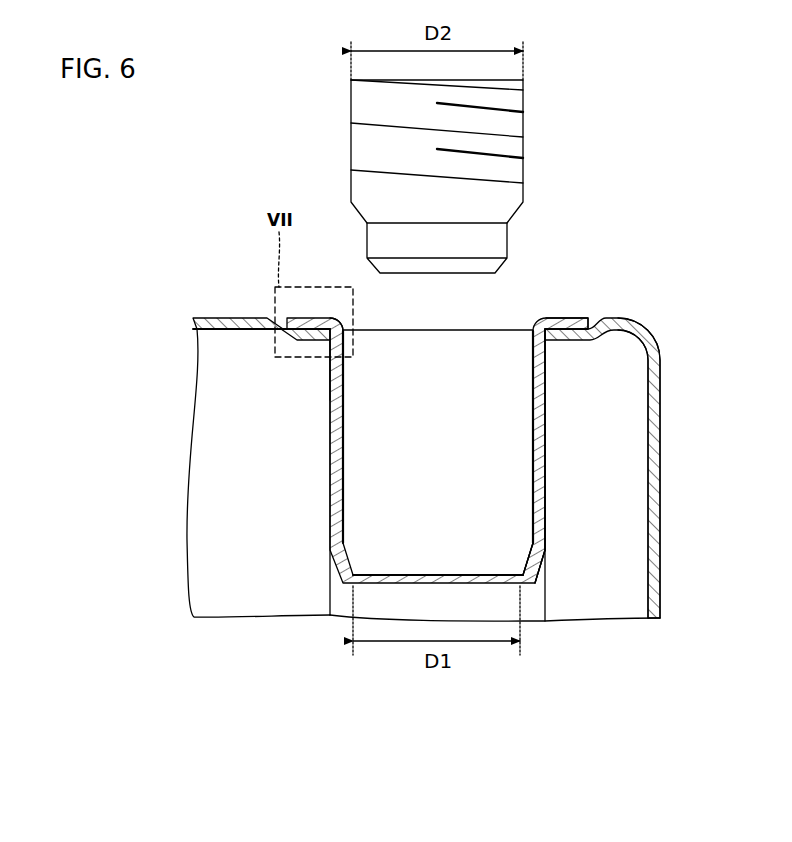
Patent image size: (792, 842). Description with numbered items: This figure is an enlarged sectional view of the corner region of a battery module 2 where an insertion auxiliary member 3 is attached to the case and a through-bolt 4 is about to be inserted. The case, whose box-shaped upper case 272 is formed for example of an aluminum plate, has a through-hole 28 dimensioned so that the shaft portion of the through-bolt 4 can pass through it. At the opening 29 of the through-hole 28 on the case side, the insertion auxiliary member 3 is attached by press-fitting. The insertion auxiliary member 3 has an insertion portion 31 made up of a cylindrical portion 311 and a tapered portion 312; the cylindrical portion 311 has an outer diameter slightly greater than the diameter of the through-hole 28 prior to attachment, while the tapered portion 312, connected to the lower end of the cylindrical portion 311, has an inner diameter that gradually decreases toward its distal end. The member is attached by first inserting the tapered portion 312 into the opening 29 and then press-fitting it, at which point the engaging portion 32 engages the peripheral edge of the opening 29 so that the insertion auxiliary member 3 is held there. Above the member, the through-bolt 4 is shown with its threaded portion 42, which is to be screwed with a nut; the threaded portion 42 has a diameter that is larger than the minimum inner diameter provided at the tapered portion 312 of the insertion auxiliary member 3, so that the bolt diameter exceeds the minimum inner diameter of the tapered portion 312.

The battery module 2 is at (210, 300).
The insertion auxiliary member 3 is at (537, 404).
The through-bolt 4 is at (542, 82).
The through-hole 28 is at (332, 602).
The opening 29 is at (345, 388).
The insertion portion 31 is at (655, 456).
The engaging portion 32 is at (562, 320).
The threaded portion 42 is at (512, 127).
The upper case 272 is at (645, 328).
The cylindrical portion 311 is at (540, 443).
The tapered portion 312 is at (540, 563).